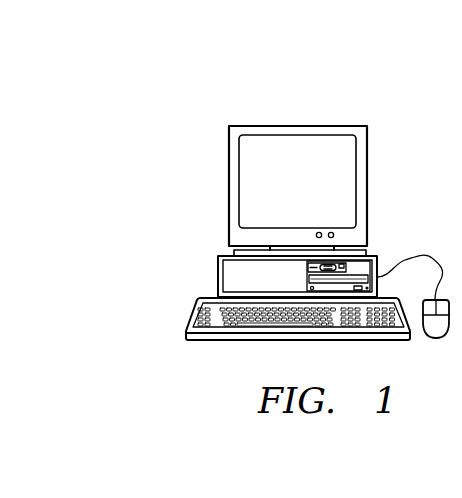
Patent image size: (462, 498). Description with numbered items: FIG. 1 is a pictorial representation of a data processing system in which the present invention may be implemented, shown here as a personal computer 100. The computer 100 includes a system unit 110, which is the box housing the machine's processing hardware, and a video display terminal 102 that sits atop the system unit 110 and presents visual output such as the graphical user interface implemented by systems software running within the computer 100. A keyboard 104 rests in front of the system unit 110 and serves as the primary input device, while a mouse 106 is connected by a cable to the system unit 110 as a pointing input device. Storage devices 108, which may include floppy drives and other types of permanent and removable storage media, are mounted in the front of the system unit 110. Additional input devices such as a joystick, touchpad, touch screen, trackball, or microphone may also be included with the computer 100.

The computer 100 is at (318, 106).
The video display terminal 102 is at (245, 182).
The keyboard 104 is at (215, 322).
The mouse 106 is at (436, 338).
The storage devices 108 is at (349, 270).
The system unit 110 is at (222, 278).